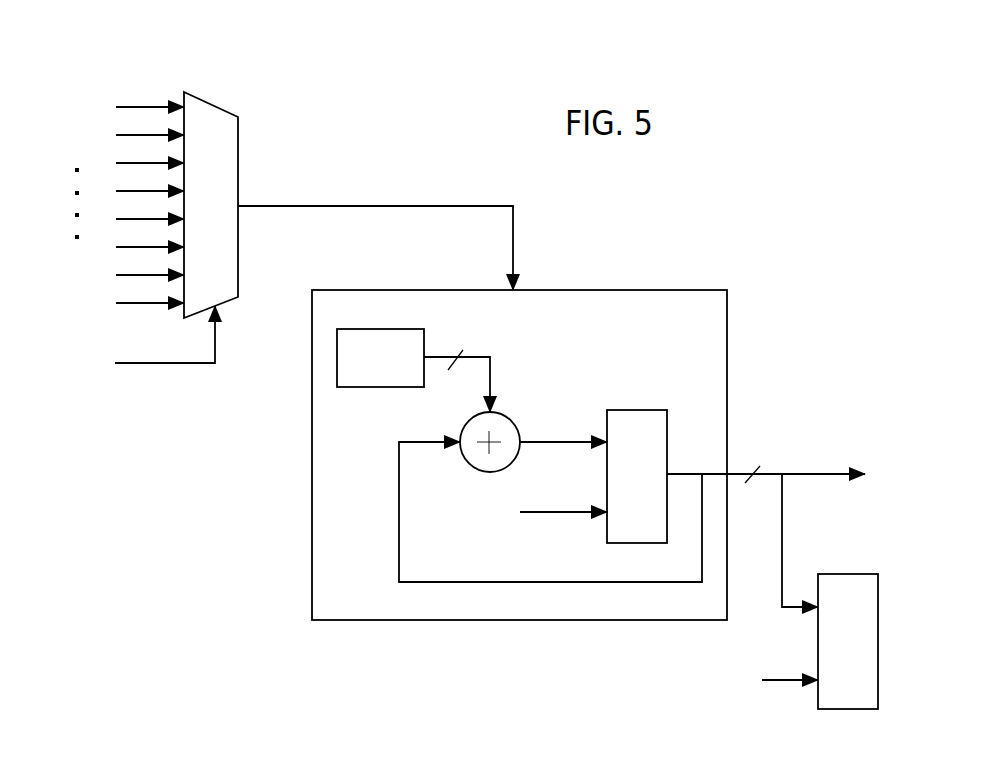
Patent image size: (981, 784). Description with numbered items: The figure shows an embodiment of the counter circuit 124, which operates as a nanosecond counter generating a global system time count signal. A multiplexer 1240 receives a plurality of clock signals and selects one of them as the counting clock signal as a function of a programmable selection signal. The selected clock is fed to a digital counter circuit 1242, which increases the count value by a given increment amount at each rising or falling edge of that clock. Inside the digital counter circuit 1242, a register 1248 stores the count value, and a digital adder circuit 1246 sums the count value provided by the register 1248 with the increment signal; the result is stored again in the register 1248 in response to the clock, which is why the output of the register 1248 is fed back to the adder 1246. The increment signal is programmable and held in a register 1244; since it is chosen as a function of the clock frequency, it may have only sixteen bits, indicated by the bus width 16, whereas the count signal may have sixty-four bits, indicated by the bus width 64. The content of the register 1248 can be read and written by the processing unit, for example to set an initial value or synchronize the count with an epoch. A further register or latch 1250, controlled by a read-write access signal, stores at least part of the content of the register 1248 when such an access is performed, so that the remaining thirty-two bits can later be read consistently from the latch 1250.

The counter circuit 124 is at (818, 171).
The multiplexer 1240 is at (228, 137).
The digital counter circuit 1242 is at (716, 305).
The register 1244 is at (371, 329).
The 16-bit increment bus 16 is at (457, 367).
The digital adder circuit 1246 is at (509, 423).
The register 1248 is at (638, 410).
The 64-bit global system time output 64 is at (766, 525).
The register or latch 1250 is at (846, 574).